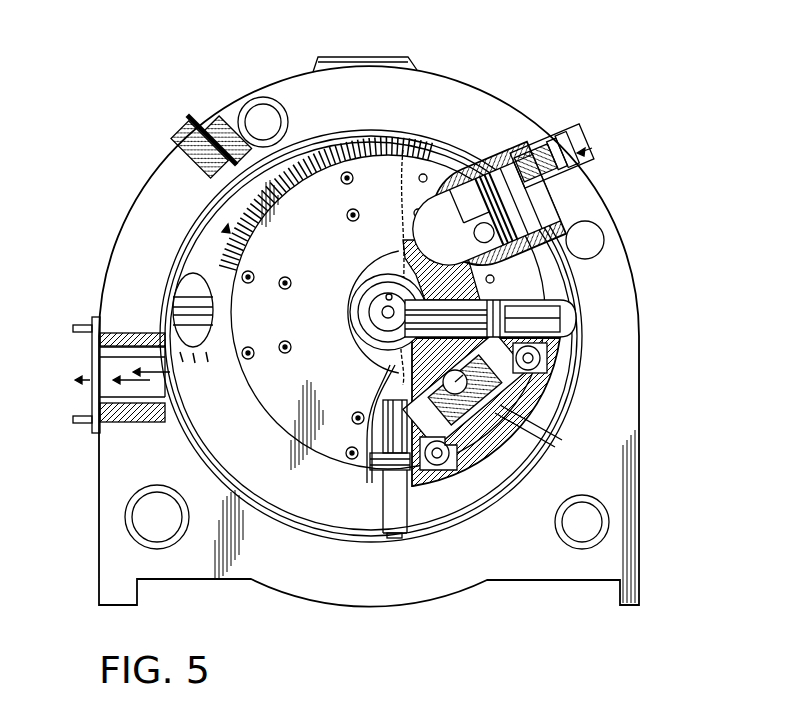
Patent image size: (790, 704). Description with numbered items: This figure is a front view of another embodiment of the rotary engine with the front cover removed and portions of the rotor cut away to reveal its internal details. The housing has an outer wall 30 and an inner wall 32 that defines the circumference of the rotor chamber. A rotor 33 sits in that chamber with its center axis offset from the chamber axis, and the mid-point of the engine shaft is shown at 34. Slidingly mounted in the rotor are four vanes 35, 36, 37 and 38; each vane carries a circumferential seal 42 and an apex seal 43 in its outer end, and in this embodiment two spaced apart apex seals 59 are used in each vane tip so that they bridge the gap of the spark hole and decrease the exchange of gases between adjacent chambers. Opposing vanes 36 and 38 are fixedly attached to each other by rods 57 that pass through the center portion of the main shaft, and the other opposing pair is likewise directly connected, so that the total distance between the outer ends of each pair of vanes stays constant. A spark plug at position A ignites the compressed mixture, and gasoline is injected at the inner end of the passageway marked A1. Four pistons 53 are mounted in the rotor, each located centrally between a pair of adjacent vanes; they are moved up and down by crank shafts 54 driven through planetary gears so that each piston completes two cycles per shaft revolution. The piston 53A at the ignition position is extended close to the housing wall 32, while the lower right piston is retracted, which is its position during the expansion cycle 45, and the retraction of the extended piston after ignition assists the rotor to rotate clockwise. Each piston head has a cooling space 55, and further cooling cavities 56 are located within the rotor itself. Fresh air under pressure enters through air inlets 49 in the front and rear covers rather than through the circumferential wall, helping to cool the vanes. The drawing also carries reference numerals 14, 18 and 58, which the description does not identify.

The housing boss 14 is at (370, 57).
The inlet pipe 18 is at (90, 363).
The outer wall 30 is at (442, 78).
The inner wall 32 is at (460, 140).
The rotor 33 is at (437, 173).
The mid-point of engine shaft 34 is at (388, 312).
The vane 35 is at (385, 130).
The vane 36 is at (572, 324).
The vane 37 is at (447, 400).
The vane 38 is at (172, 298).
The circumferential seal 42 is at (503, 300).
The apex seal 43 is at (575, 303).
The expansion cycle 45 is at (547, 413).
The air inlets 49 is at (182, 288).
The pistons 53 is at (520, 433).
The piston at ignition position 53A is at (567, 170).
The crank shafts 54 is at (522, 413).
The cooling space 55 is at (510, 447).
The cooling cavities 56 is at (540, 360).
The rods 57 is at (512, 160).
The bottom piston 58 is at (367, 470).
The apex seals 59 is at (385, 540).
The spark plug position A is at (594, 136).
The passageway A1 is at (204, 114).